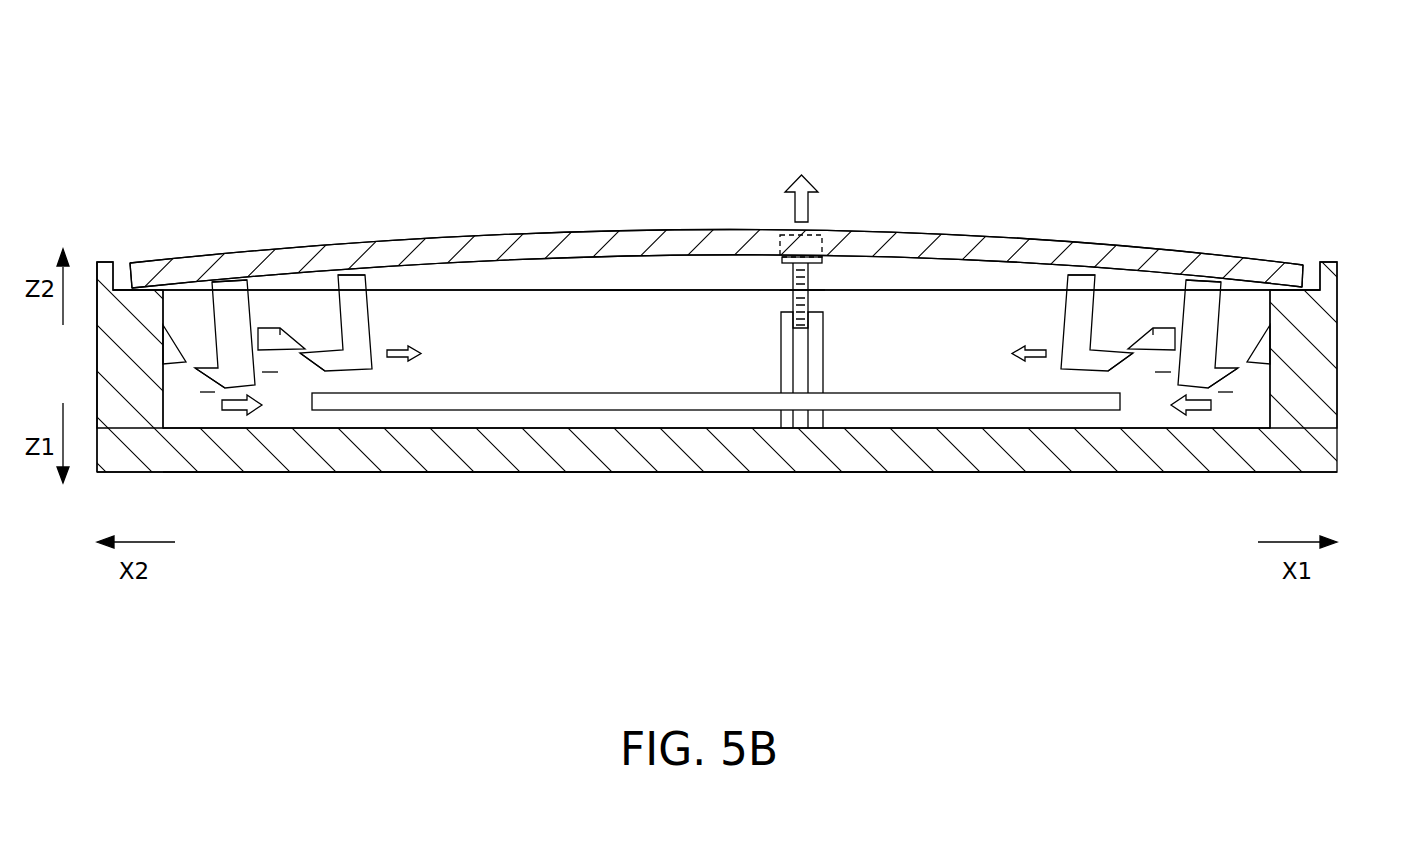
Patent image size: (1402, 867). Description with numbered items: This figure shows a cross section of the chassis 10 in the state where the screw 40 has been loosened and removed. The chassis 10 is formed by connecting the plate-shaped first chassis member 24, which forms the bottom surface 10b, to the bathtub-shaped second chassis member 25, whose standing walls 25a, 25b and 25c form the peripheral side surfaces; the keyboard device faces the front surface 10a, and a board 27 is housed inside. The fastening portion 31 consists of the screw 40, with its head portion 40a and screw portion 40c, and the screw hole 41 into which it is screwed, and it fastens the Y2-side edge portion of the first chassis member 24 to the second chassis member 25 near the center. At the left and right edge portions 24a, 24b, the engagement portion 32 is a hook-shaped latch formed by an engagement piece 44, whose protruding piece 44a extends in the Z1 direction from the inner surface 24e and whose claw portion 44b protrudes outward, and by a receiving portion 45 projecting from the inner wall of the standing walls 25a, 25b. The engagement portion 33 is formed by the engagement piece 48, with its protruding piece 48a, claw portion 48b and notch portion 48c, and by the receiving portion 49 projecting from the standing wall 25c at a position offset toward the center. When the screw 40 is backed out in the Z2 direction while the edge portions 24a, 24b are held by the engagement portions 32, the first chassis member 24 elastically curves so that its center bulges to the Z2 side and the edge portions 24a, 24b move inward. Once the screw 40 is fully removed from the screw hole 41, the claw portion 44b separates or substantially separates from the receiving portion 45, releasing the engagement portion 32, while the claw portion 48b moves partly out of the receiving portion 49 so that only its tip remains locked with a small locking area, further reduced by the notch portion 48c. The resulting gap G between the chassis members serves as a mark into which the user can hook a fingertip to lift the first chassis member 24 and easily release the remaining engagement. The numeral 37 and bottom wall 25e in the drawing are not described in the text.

The chassis 10 is at (55, 165).
The front surface 10a is at (468, 472).
The bottom surface 10b is at (553, 257).
The first chassis member 24 is at (964, 237).
The edge portion 24a is at (1275, 254).
The edge portion 24b is at (185, 258).
The inner surface 24e is at (554, 258).
The second chassis member 25 is at (942, 472).
The standing wall 25a is at (1307, 383).
The standing wall 25b is at (128, 376).
The standing wall 25c is at (680, 305).
The bottom wall of housing 25e is at (612, 425).
The board 27 is at (562, 410).
The fastening portion 31 is at (816, 275).
The engagement portion 32 is at (207, 388).
The engagement portion 33 is at (270, 372).
The washer 37 is at (783, 263).
The screw 40 is at (788, 230).
The head portion 40a is at (800, 247).
The screw portion 40c is at (797, 302).
The screw hole 41 is at (802, 375).
The engagement piece 44 is at (222, 385).
The protruding piece 44a is at (228, 295).
The claw portion 44b is at (200, 368).
The receiving portion 45 is at (167, 353).
The engagement piece 48 is at (358, 366).
The protruding piece 48a is at (347, 283).
The claw portion 48b is at (328, 349).
The notch portion 48c is at (285, 382).
The receiving portion 49 is at (277, 332).
The gap G is at (627, 275).